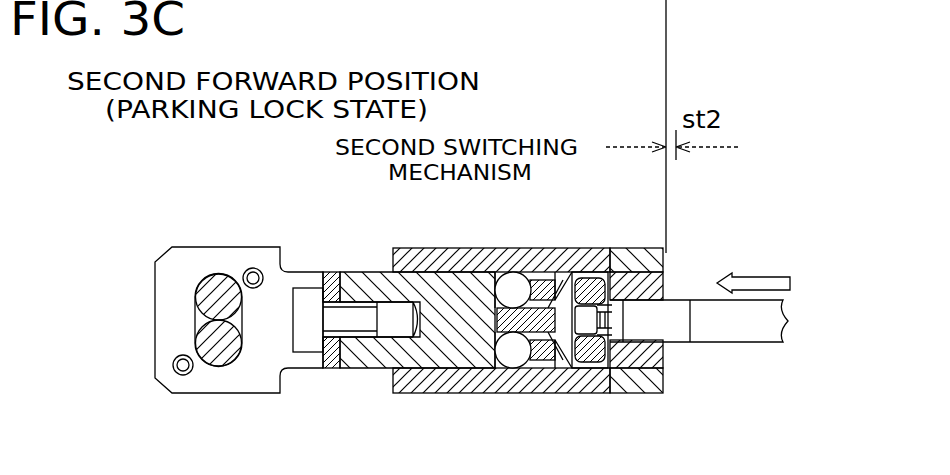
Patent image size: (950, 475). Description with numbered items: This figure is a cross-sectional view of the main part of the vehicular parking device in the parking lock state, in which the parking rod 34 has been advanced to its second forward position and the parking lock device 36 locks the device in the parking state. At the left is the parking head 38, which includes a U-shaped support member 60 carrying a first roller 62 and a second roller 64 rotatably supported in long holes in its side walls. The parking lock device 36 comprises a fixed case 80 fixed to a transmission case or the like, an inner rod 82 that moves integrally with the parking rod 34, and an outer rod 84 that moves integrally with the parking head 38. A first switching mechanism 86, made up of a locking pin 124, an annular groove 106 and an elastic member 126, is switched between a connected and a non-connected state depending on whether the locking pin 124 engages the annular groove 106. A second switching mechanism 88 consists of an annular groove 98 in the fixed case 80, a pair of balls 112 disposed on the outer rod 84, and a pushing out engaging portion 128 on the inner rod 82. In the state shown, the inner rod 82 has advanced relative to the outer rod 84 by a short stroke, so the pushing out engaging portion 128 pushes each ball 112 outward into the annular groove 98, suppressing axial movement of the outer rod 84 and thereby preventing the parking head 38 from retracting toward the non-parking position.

The parking rod 34 is at (714, 332).
The parking lock device 36 is at (674, 228).
The parking head 38 is at (197, 323).
The support member 60 is at (259, 378).
The first roller 62 is at (209, 362).
The second roller 64 is at (217, 290).
The fixed case 80 is at (524, 230).
The inner rod 82 is at (665, 251).
The outer rod 84 is at (420, 395).
The first switching mechanism 86 is at (596, 396).
The second switching mechanism 88 is at (499, 250).
The annular groove 98 is at (475, 262).
The annular groove 106 is at (637, 253).
The ball 112 is at (499, 366).
The locking pin 124 is at (620, 386).
The elastic member 126 is at (566, 272).
The pushing out engaging portion 128 is at (543, 370).